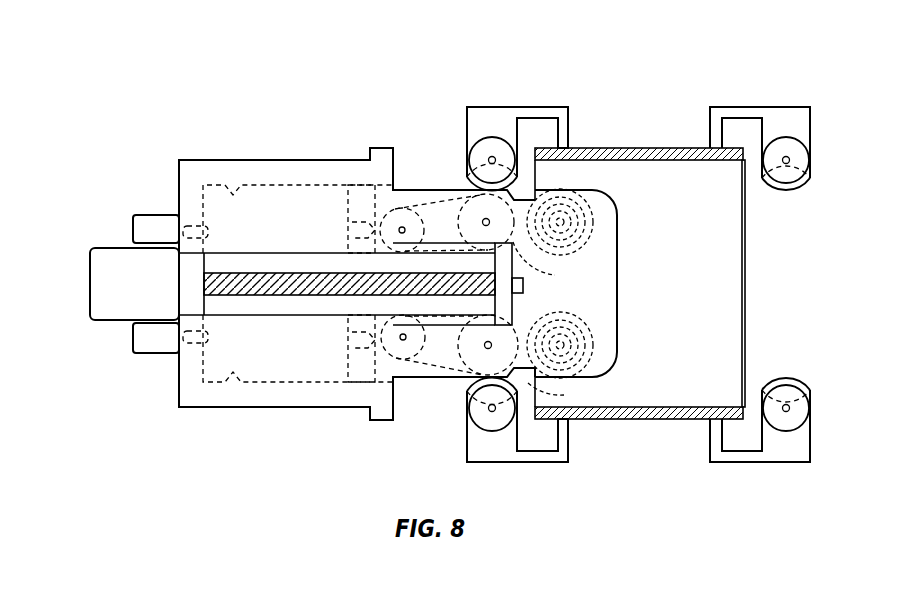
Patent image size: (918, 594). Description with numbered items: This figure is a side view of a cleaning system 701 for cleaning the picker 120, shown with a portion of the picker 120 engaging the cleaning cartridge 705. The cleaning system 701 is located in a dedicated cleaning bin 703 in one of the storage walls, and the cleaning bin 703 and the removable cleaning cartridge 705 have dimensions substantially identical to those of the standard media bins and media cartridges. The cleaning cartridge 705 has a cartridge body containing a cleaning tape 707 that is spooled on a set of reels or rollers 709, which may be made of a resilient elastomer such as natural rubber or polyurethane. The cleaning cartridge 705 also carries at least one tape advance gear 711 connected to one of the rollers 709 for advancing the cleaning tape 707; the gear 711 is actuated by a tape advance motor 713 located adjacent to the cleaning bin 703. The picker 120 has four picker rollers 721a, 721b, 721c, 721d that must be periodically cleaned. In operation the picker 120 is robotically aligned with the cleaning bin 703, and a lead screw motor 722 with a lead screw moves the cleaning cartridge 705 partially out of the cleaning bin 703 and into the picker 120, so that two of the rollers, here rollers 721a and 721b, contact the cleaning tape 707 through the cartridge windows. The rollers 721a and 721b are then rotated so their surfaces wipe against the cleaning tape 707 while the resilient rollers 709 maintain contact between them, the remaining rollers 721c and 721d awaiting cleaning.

The cleaning system 701 is at (225, 52).
The cleaning bin 703 is at (305, 156).
The tape advance motor 713 is at (128, 227).
The lead screw motor 722 is at (110, 323).
The tape advance gear 711 is at (348, 200).
The cleaning tape 707 is at (462, 196).
The rollers 709 is at (546, 268).
The cleaning cartridge 705 is at (620, 287).
The picker 120 is at (600, 143).
The picker roller 721a is at (467, 155).
The picker roller 721b is at (466, 418).
The picker roller 721c is at (774, 185).
The picker roller 721d is at (788, 383).